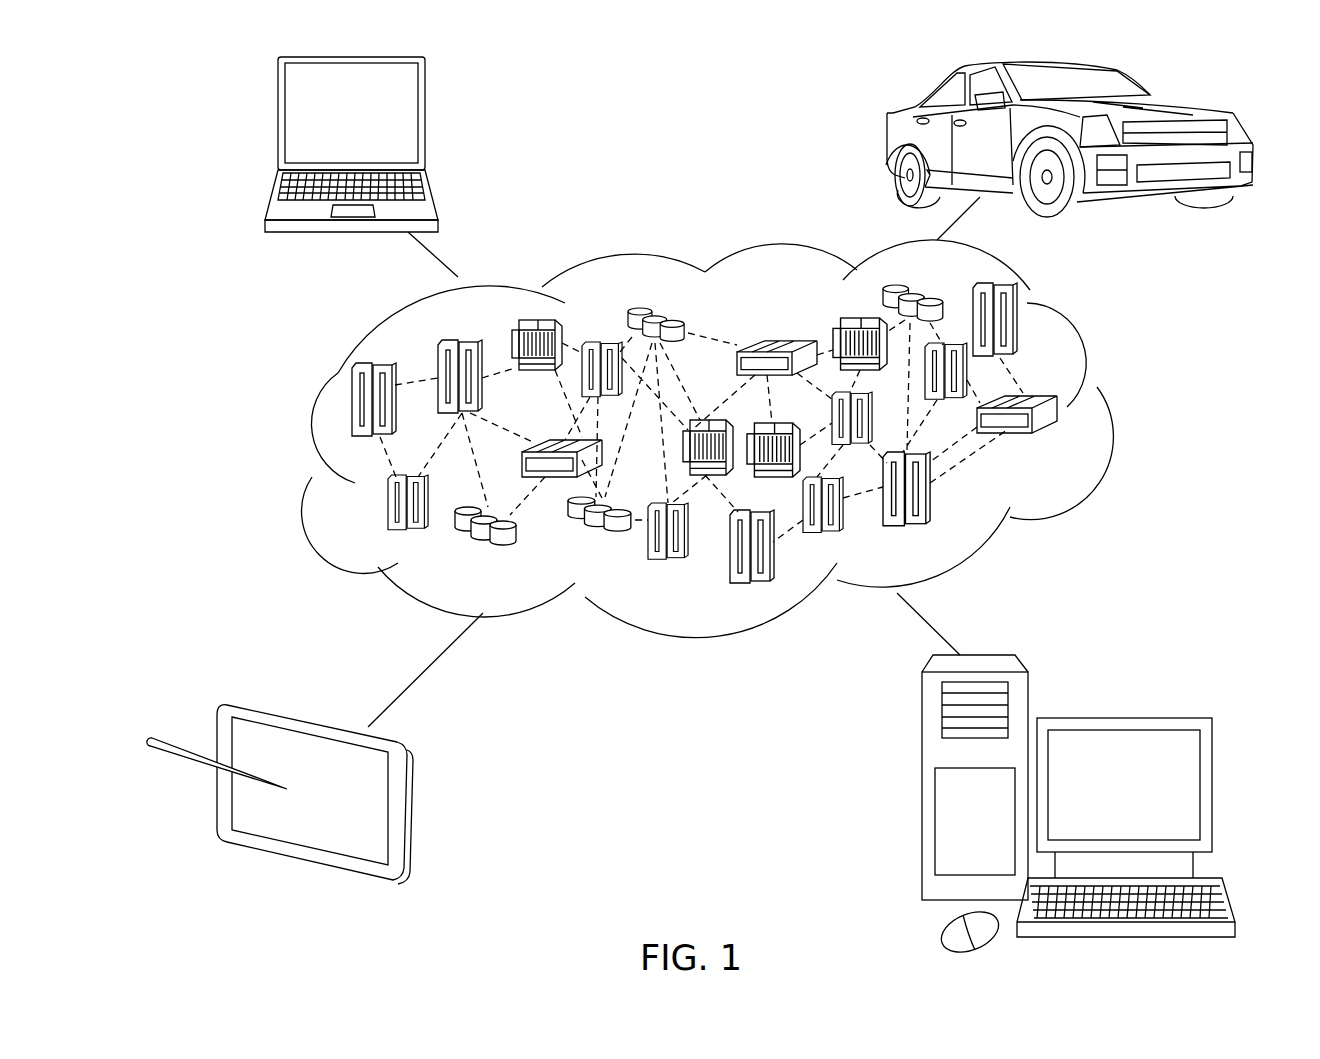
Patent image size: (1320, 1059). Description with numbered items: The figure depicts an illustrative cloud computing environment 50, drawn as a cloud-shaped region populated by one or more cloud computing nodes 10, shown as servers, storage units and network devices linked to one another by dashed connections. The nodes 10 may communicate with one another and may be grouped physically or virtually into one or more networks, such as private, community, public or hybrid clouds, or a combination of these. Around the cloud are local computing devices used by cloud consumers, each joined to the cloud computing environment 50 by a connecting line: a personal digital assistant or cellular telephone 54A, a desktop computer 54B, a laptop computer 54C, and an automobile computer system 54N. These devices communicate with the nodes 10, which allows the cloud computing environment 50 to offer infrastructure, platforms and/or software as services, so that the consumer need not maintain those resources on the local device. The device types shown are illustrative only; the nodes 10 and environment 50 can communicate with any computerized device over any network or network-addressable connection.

The cloud computing nodes 10 is at (1060, 443).
The cloud computing environment 50 is at (1122, 411).
The personal digital assistant (PDA) or cellular telephone 54A is at (413, 817).
The desktop computer 54B is at (1120, 717).
The laptop computer 54C is at (425, 121).
The automobile computer system 54N is at (888, 140).